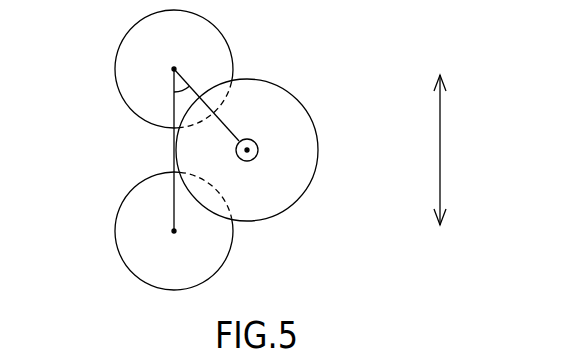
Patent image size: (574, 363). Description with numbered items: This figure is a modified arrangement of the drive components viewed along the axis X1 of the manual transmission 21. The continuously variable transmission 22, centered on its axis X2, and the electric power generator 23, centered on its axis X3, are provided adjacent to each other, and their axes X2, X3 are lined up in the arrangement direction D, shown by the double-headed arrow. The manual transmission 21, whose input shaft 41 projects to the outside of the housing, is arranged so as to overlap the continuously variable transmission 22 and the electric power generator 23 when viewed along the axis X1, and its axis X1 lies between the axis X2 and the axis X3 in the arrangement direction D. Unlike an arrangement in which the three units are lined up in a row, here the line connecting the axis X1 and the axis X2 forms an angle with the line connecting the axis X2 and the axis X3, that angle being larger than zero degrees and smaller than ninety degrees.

The manual transmission 21 is at (305, 152).
The continuously variable transmission 22 is at (232, 48).
The electric power generator 23 is at (230, 248).
The input shaft 41 is at (264, 156).
The axis X1 is at (254, 142).
The axis X2 is at (174, 69).
The axis X3 is at (174, 231).
The arrangement direction D is at (440, 152).